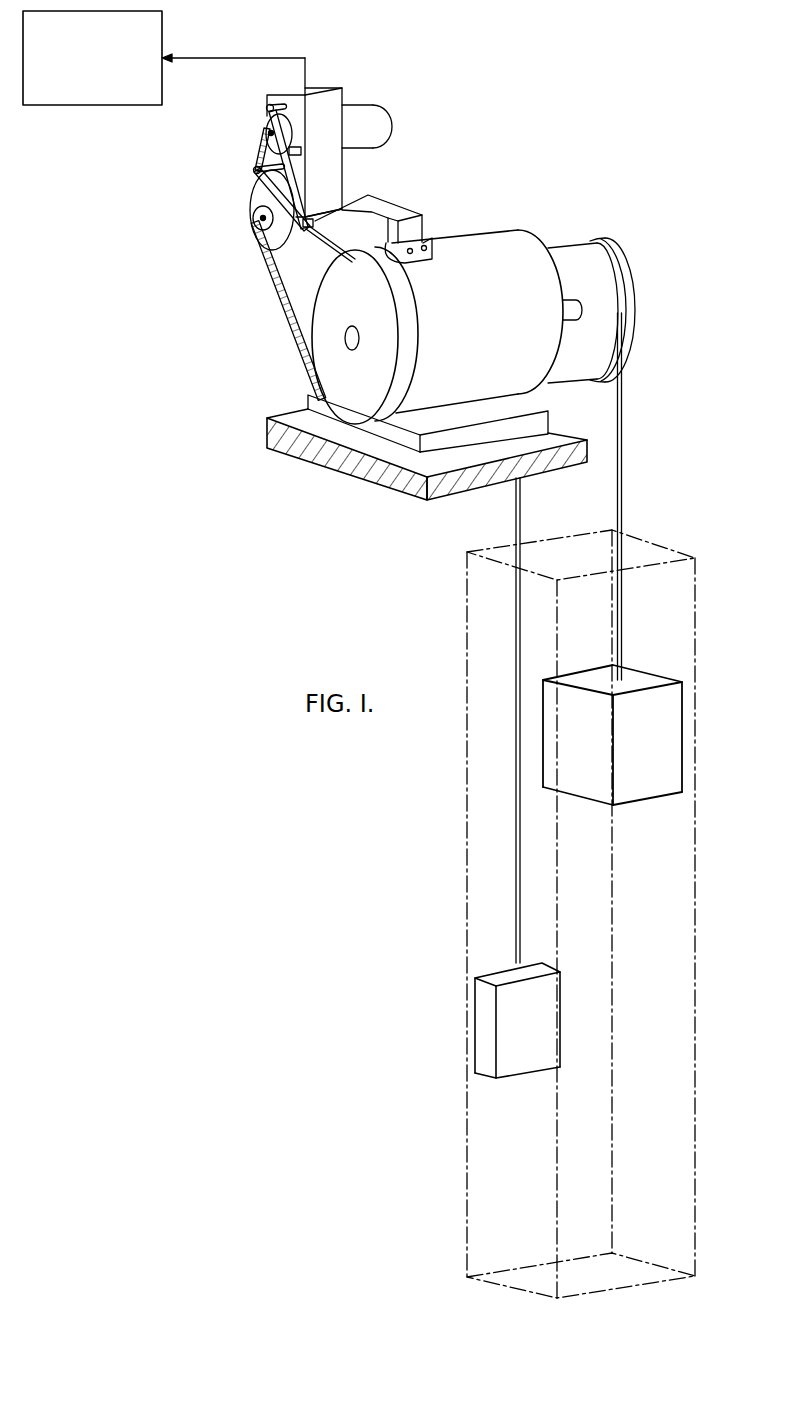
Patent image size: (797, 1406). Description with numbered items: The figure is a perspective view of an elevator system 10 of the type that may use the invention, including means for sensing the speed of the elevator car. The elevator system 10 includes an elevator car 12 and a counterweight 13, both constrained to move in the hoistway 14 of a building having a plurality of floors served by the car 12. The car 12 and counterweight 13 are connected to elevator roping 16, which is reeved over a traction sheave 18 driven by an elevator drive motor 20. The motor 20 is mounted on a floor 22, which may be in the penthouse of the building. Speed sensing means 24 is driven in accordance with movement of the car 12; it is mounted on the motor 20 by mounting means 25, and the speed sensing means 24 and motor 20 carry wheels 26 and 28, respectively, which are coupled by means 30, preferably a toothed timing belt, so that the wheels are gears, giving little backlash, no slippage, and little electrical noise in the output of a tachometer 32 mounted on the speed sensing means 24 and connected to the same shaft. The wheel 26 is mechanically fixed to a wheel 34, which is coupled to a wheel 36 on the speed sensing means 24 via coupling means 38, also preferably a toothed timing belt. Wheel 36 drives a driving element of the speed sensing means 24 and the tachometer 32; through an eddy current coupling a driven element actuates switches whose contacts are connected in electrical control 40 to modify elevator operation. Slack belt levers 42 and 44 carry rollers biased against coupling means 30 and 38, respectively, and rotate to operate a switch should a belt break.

The elevator system 10 is at (413, 558).
The elevator car 12 is at (675, 733).
The counterweight 13 is at (482, 1019).
The hoistway 14 is at (697, 848).
The elevator roping 16 is at (622, 418).
The traction sheave 18 is at (636, 330).
The elevator drive motor 20 is at (490, 230).
The floor 22 is at (266, 432).
The speed sensing means 24 is at (282, 173).
The mounting means 25 is at (410, 208).
The wheel 26 is at (256, 229).
The wheel 28 is at (322, 362).
The coupling means 30 is at (282, 300).
The tachometer 32 is at (366, 108).
The wheel 34 is at (260, 201).
The wheel 36 is at (263, 143).
The coupling means 38 is at (258, 156).
The electrical control 40 is at (138, 105).
The slack belt lever 42 is at (262, 190).
The slack belt lever 44 is at (266, 116).